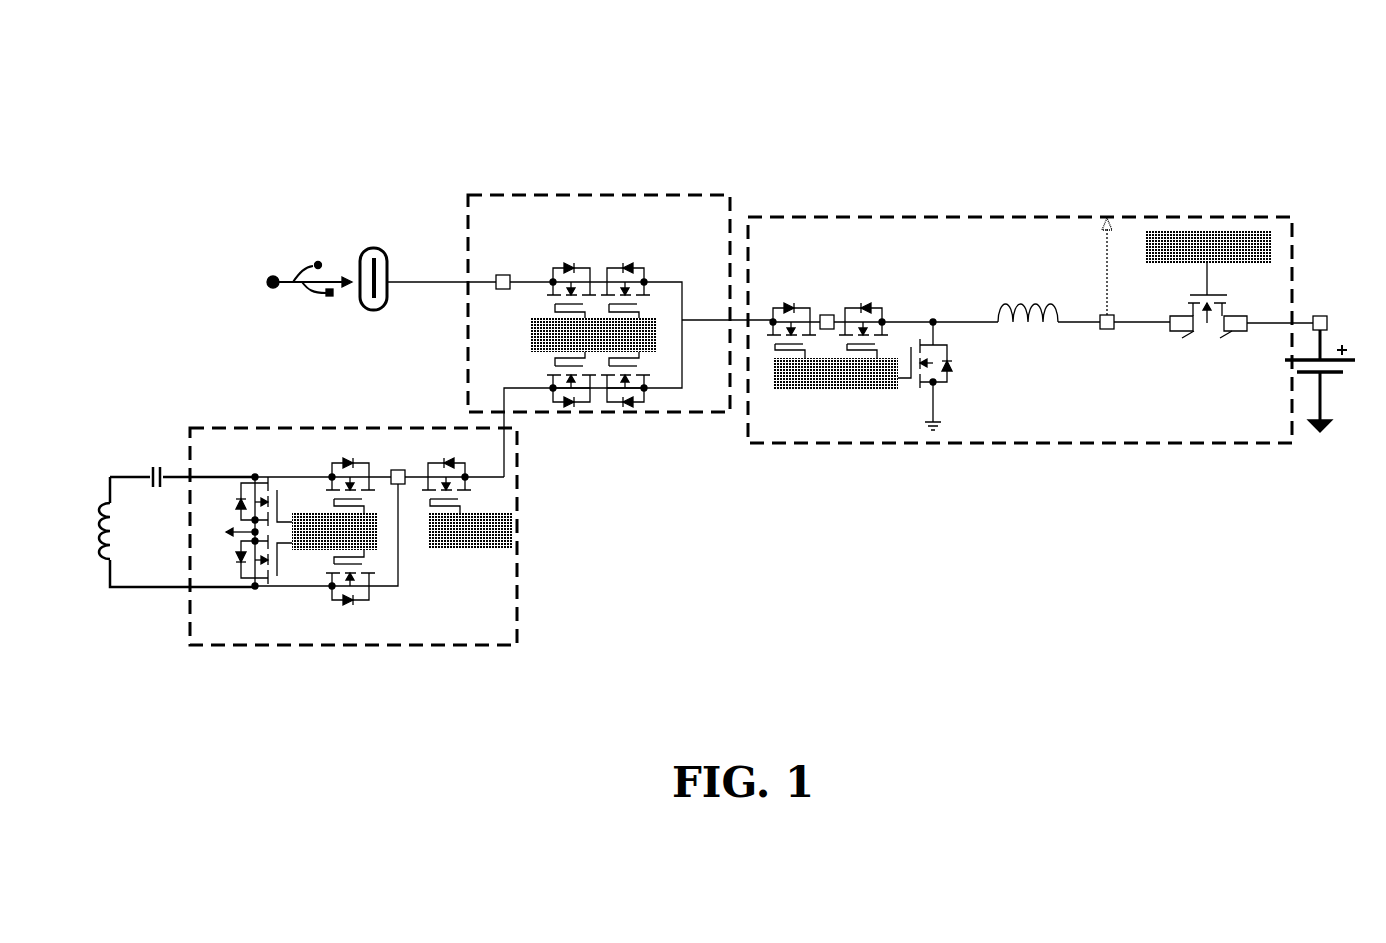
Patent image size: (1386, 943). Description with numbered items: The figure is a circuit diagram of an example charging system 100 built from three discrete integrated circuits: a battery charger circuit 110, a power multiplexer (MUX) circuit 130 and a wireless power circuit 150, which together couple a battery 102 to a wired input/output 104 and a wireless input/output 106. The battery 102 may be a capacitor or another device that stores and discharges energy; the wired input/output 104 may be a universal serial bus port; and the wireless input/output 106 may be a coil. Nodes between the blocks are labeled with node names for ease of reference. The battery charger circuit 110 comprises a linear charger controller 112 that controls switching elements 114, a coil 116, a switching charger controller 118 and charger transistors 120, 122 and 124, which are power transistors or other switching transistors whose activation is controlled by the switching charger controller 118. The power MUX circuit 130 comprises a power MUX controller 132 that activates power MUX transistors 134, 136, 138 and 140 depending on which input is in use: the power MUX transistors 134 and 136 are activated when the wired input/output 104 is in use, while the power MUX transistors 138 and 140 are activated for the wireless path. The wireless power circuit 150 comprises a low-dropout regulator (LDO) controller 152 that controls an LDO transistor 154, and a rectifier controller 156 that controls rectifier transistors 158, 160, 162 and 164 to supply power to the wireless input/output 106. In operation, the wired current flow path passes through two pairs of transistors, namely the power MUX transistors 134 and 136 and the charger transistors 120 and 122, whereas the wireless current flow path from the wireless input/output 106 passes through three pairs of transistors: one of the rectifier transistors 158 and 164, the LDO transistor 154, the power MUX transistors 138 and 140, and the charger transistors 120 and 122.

The charging system 100 is at (742, 74).
The battery 102 is at (1330, 373).
The wired input/output 104 is at (372, 247).
The wireless input/output 106 is at (102, 507).
The battery charger circuit 110 is at (863, 217).
The linear charger controller 112 is at (1225, 230).
The switching elements 114 is at (1207, 325).
The coil 116 is at (1035, 300).
The switching charger controller 118 is at (833, 392).
The charger transistor 120 is at (783, 305).
The charger transistor 122 is at (875, 305).
The charger transistor 124 is at (945, 382).
The power multiplexer (MUX) circuit 130 is at (500, 193).
The power MUX controller 132 is at (650, 353).
The power MUX transistor 134 is at (583, 267).
The power MUX transistor 136 is at (633, 267).
The power MUX transistor 138 is at (580, 405).
The power MUX transistor 140 is at (632, 405).
The wireless power circuit 150 is at (255, 428).
The low-dropout regulator (LDO) controller 152 is at (467, 549).
The LDO transistor 154 is at (450, 460).
The rectifier controller 156 is at (305, 550).
The rectifier transistor 158 is at (352, 460).
The rectifier transistor 160 is at (237, 493).
The rectifier transistor 162 is at (237, 548).
The rectifier transistor 164 is at (360, 604).